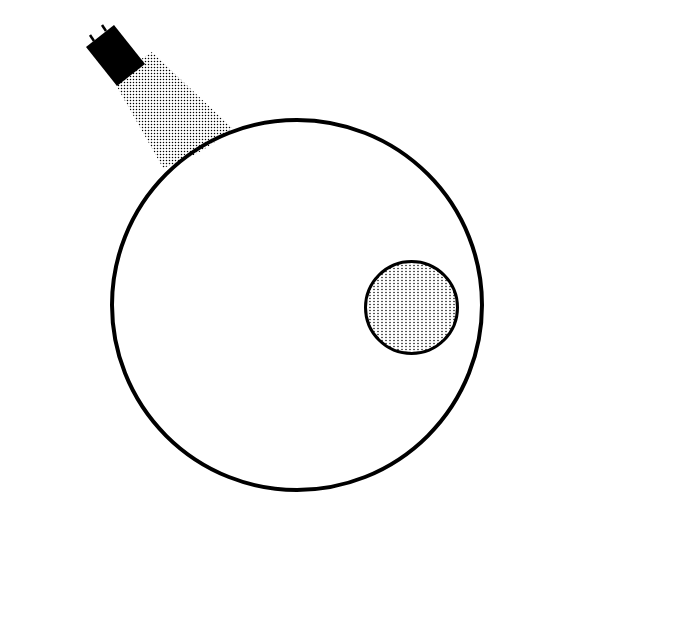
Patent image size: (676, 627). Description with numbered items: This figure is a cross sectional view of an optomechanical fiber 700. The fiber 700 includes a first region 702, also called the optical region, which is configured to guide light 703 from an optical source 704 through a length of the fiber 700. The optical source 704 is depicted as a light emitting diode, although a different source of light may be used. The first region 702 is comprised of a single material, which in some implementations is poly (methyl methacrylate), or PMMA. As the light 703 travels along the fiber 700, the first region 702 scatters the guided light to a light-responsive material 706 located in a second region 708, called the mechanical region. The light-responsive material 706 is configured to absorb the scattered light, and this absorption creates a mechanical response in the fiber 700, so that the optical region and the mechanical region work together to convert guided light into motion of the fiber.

The fiber 700 is at (478, 165).
The first region 702 is at (302, 137).
The light 703 is at (187, 128).
The optical source 704 is at (95, 106).
The light-responsive material 706 is at (442, 305).
The second region 708 is at (373, 269).